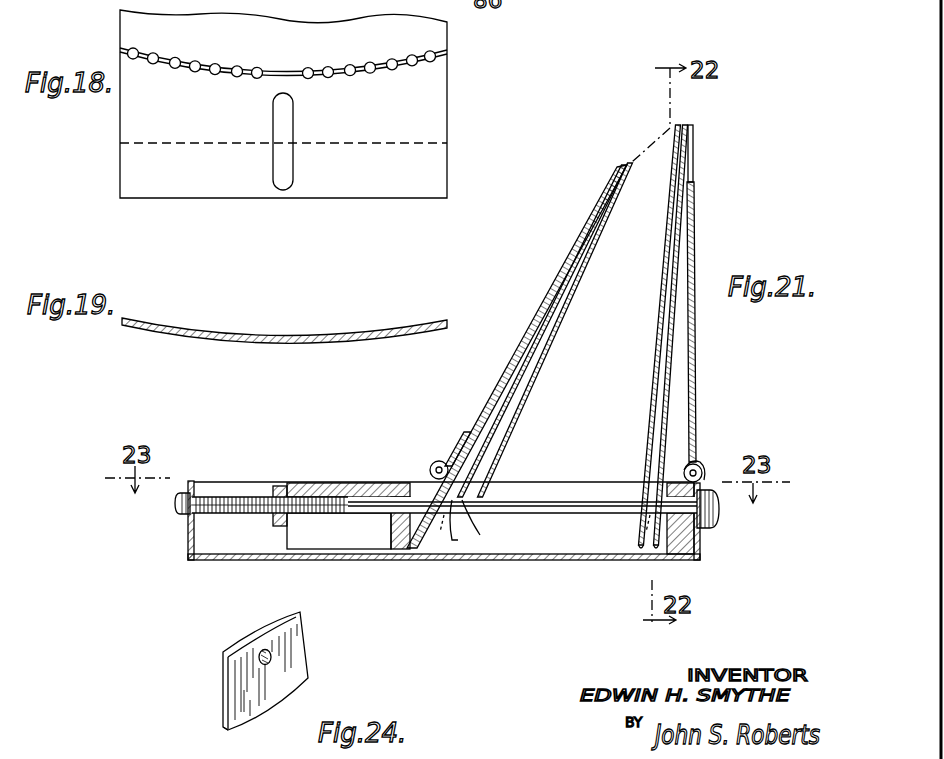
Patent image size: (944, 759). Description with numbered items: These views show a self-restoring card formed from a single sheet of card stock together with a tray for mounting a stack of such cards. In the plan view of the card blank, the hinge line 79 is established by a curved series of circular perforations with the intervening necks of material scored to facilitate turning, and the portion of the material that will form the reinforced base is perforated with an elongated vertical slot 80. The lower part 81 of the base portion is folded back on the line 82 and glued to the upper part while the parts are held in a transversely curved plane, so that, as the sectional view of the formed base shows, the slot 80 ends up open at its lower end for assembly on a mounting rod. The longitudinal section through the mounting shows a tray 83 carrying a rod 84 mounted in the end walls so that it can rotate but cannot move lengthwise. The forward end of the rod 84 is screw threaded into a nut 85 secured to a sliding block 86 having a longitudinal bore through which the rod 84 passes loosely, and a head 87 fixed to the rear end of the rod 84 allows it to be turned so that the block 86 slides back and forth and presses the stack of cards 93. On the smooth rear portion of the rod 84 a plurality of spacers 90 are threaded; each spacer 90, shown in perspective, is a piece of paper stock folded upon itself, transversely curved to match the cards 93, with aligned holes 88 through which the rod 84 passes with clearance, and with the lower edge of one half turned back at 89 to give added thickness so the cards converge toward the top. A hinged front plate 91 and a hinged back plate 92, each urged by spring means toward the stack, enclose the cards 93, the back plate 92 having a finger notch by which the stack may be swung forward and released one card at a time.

In FIG. 18, the hinge line 79 is at (432, 51).
In FIG. 18, the elongated vertical slot 80 is at (283, 160).
In FIG. 19, the elongated vertical slot 80 is at (282, 346).
In FIG. 21, the elongated vertical slot 80 is at (440, 528).
In FIG. 18, the lower part of the base portion 81 is at (430, 174).
In FIG. 19, the lower part of the base portion 81 is at (447, 328).
In FIG. 18, the fold line 82 is at (398, 143).
In FIG. 21, the tray 83 is at (188, 542).
In FIG. 21, the rod 84 is at (567, 512).
In FIG. 21, the nut 85 is at (282, 486).
In FIG. 21, the sliding block 86 is at (360, 485).
In FIG. 21, the head 87 is at (719, 513).
In FIG. 24, the aligned holes 88 is at (272, 656).
In FIG. 21, the turned-back lower edge 89 is at (480, 528).
In FIG. 24, the turned-back lower edge 89 is at (226, 715).
In FIG. 21, the spacer 90 is at (455, 525).
In FIG. 24, the spacer 90 is at (281, 619).
In FIG. 21, the hinged front plate 91 is at (522, 339).
In FIG. 21, the hinged back plate 92 is at (698, 355).
In FIG. 21, the cards 93 is at (668, 378).